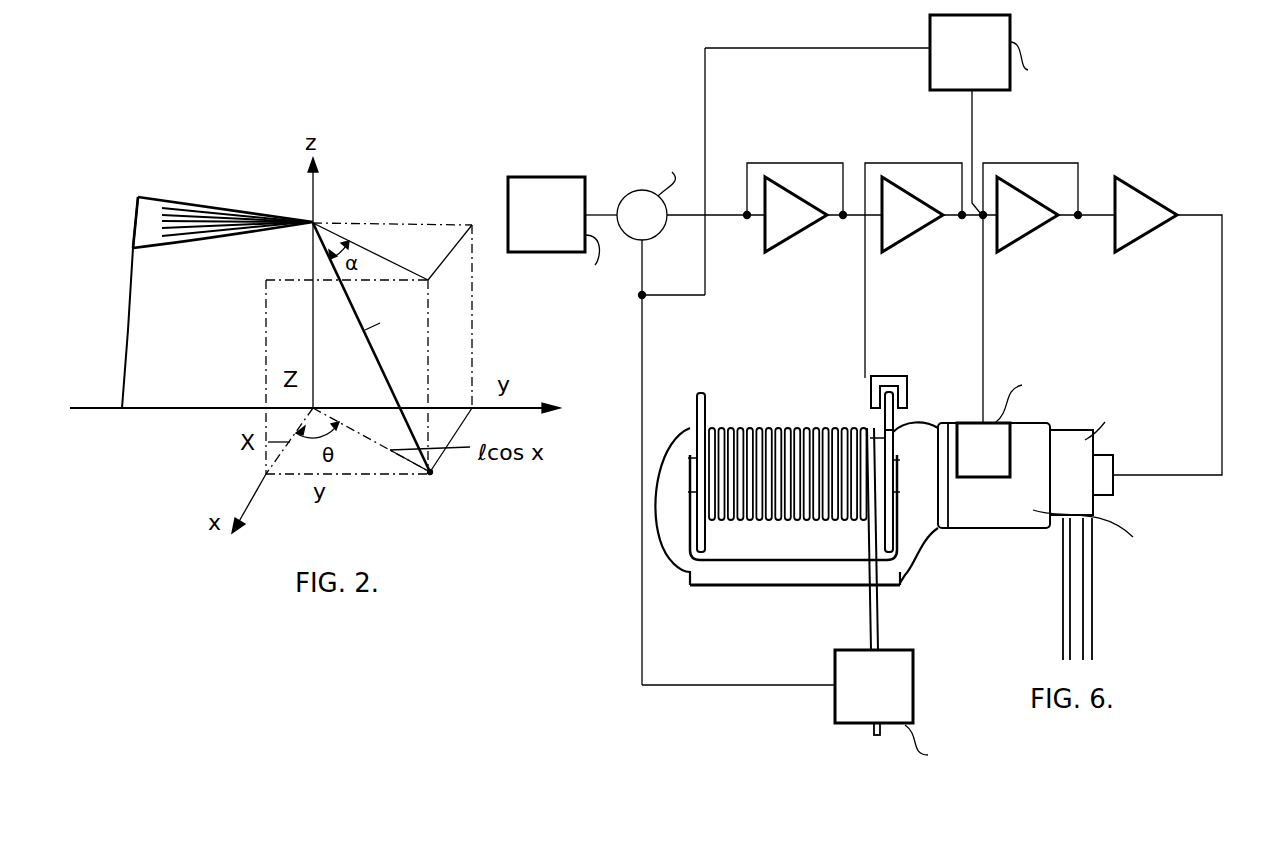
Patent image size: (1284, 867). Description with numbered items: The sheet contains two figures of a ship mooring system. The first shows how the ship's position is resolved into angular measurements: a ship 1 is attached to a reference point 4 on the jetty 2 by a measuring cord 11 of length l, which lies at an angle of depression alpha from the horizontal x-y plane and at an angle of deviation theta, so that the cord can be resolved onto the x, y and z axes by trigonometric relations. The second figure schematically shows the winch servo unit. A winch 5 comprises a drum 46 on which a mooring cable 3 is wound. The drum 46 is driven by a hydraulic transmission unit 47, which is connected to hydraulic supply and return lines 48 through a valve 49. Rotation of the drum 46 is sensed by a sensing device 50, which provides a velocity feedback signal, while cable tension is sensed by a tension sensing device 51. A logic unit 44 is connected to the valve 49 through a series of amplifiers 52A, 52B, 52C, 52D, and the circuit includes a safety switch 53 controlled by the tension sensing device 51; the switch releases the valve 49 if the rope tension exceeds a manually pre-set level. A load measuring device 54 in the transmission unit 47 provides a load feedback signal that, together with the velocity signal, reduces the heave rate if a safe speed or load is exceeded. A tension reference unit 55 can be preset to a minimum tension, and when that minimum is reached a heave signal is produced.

In FIG. 2, the ship 1 is at (217, 302).
In FIG. 2, the jetty 2 is at (315, 427).
In FIG. 2, the reference point 4 is at (430, 472).
In FIG. 2, the measuring cord 11 is at (384, 375).
In FIG. 6, the mooring cable 3 is at (868, 617).
In FIG. 6, the winch 5 is at (770, 428).
In FIG. 6, the logic unit 44 is at (553, 240).
In FIG. 6, the drum 46 is at (878, 437).
In FIG. 6, the hydraulic transmission unit 47 is at (1010, 518).
In FIG. 6, the hydraulic supply and return lines 48 is at (1085, 627).
In FIG. 6, the valve 49 is at (1078, 430).
In FIG. 6, the sensing device 50 is at (907, 378).
In FIG. 6, the tension sensing device 51 is at (922, 719).
In FIG. 6, the amplifier 52A is at (790, 240).
In FIG. 6, the amplifier 52B is at (912, 240).
In FIG. 6, the amplifier 52C is at (1026, 240).
In FIG. 6, the amplifier 52D is at (1143, 240).
In FIG. 6, the safety switch 53 is at (630, 187).
In FIG. 6, the load measuring device 54 is at (1028, 402).
In FIG. 6, the tension reference unit 55 is at (1030, 58).